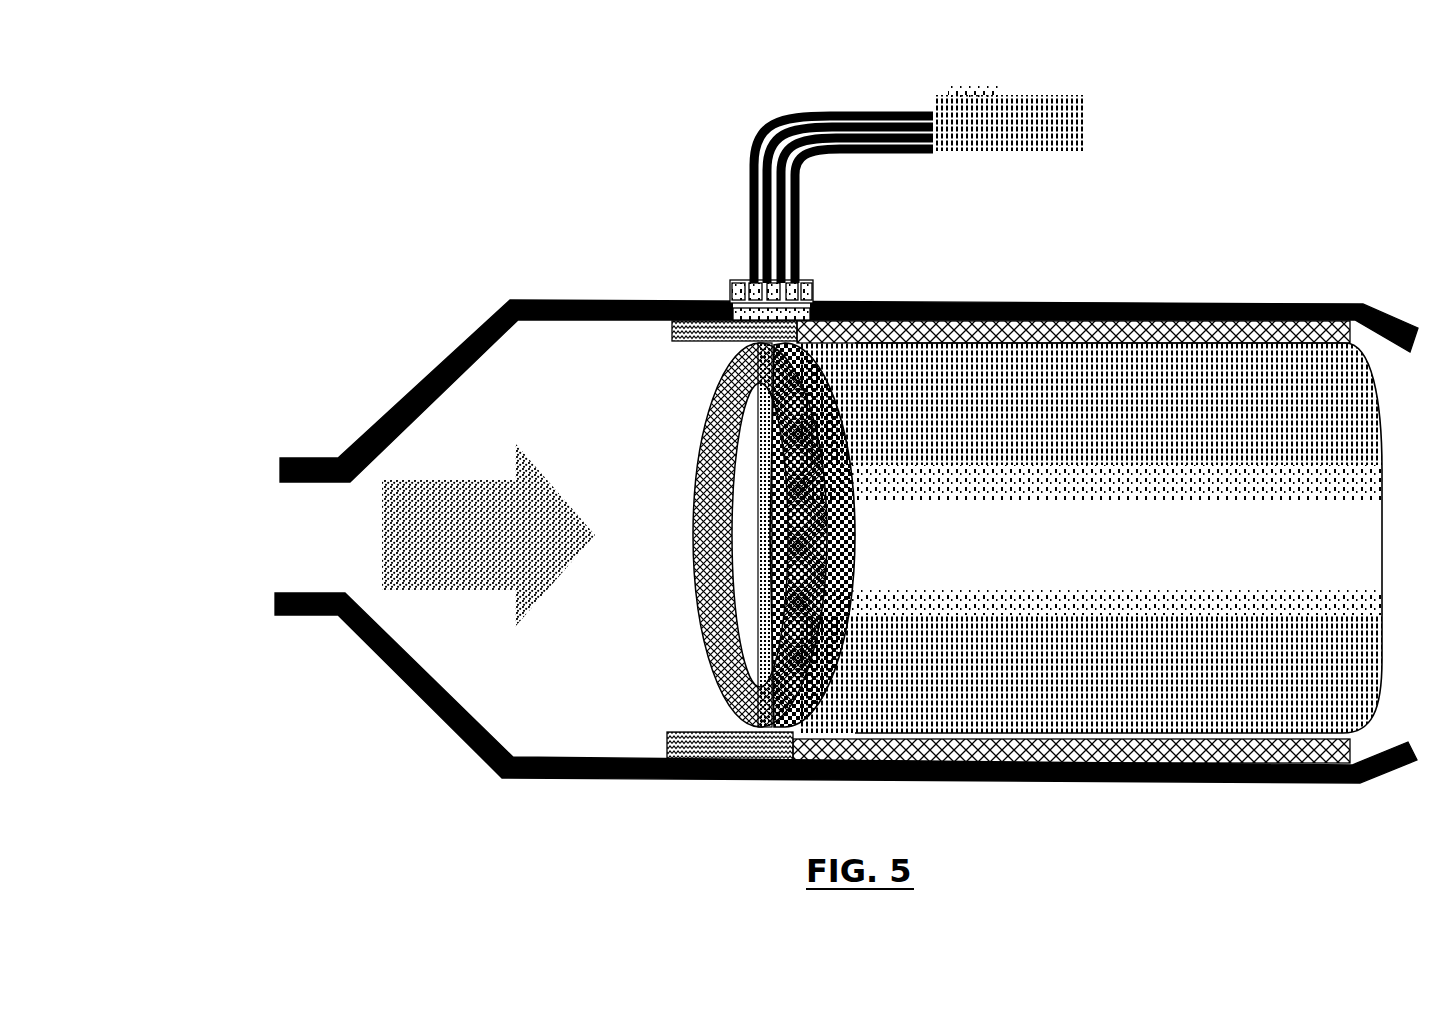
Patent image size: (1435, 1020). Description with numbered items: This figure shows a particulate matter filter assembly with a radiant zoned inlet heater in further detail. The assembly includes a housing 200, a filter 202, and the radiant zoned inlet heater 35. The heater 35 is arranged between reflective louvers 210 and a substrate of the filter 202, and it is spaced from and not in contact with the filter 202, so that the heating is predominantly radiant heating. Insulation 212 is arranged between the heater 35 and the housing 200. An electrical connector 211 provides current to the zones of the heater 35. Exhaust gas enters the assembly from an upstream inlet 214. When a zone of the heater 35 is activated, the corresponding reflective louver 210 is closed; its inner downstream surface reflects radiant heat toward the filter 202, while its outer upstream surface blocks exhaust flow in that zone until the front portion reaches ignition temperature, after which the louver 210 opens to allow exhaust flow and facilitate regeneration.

The housing 200 is at (1130, 305).
The filter 202 is at (977, 531).
The reflective louvers 210 is at (744, 489).
The electrical connector 211 is at (1065, 118).
The insulation 212 is at (668, 333).
The upstream inlet 214 is at (230, 536).
The radiant zoned inlet heater 35 is at (758, 385).